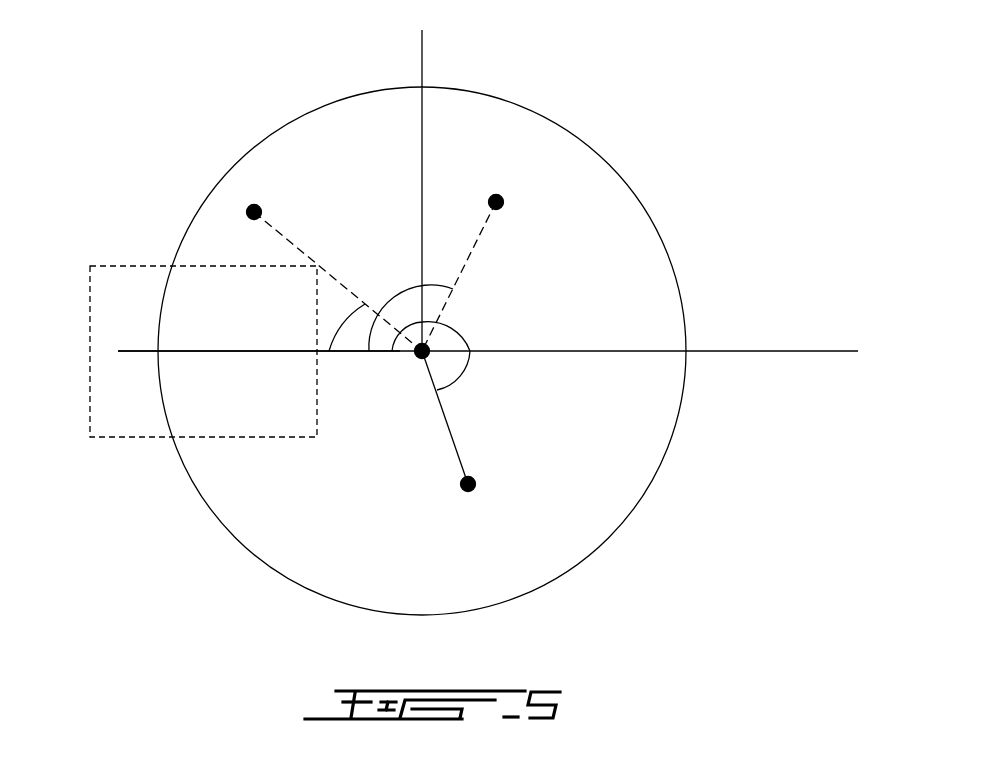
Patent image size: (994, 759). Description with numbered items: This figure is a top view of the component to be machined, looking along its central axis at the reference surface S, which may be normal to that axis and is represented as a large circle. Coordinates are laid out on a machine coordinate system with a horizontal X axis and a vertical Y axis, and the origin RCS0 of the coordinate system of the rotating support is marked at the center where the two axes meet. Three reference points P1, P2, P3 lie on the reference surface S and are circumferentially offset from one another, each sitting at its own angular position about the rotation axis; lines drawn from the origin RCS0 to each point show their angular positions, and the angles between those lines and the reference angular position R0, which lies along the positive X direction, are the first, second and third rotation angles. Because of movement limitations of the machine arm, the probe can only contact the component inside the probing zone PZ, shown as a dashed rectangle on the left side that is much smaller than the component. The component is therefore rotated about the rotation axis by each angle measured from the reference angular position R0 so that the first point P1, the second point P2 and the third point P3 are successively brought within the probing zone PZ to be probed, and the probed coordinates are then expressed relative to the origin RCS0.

The first point P1 is at (252, 195).
The second point P2 is at (507, 180).
The third point P3 is at (488, 497).
The probing zone PZ is at (115, 265).
The reference angular position R0 is at (120, 352).
The origin of the support coordinate system RCS0 is at (415, 356).
The reference surface S is at (390, 538).
The X axis X is at (488, 370).
The Y axis Y is at (409, 189).